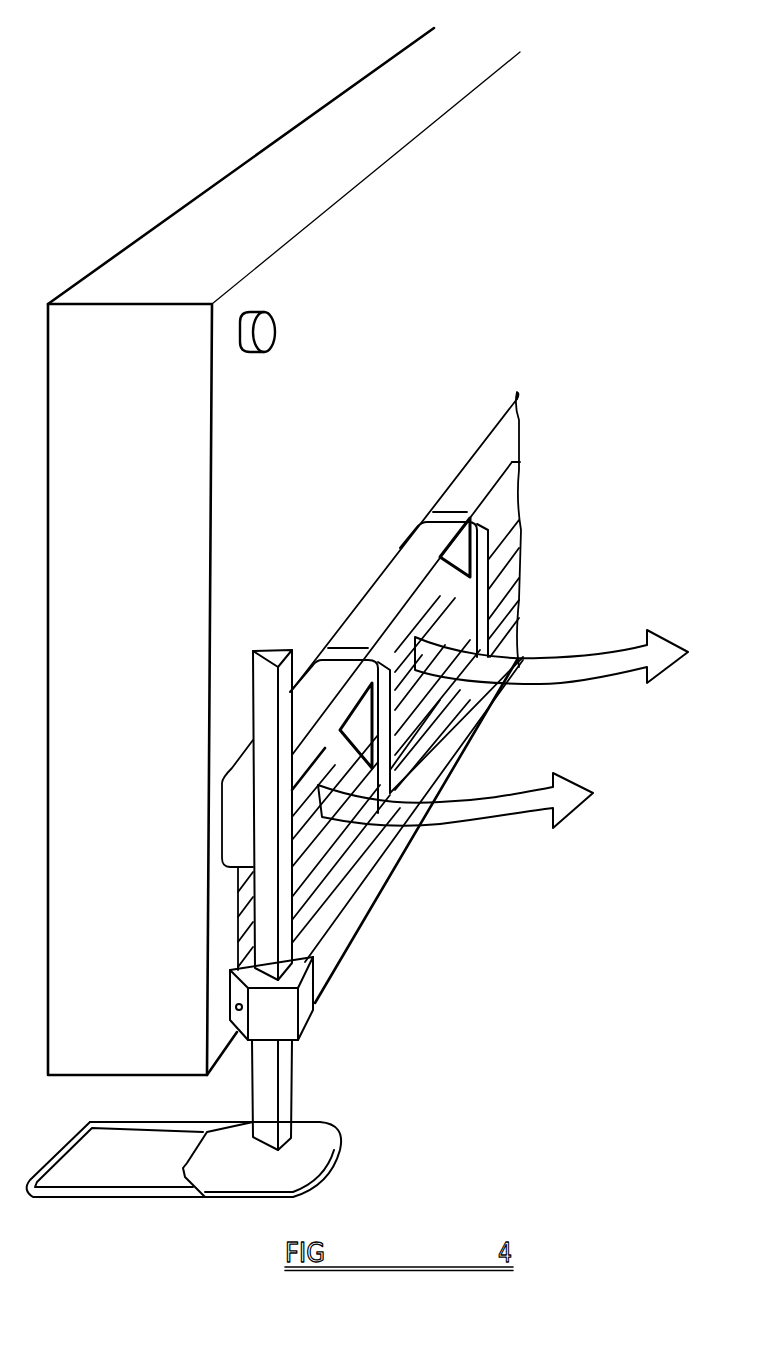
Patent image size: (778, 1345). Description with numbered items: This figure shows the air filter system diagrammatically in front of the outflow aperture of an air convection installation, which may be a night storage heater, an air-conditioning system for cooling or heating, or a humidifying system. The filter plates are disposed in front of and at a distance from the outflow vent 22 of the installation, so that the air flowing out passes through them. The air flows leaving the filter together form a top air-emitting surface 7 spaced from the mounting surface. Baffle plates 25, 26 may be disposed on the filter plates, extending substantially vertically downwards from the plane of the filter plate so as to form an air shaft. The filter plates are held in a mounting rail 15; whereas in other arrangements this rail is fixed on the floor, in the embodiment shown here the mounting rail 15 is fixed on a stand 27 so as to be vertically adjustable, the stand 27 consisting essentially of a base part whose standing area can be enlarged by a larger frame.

The top air-emitting surface 7 is at (408, 688).
The mounting rail 15 is at (372, 867).
The outflow vent 22 is at (373, 738).
The baffle plate 25 is at (315, 687).
The baffle plate 26 is at (398, 567).
The stand 27 is at (335, 1050).